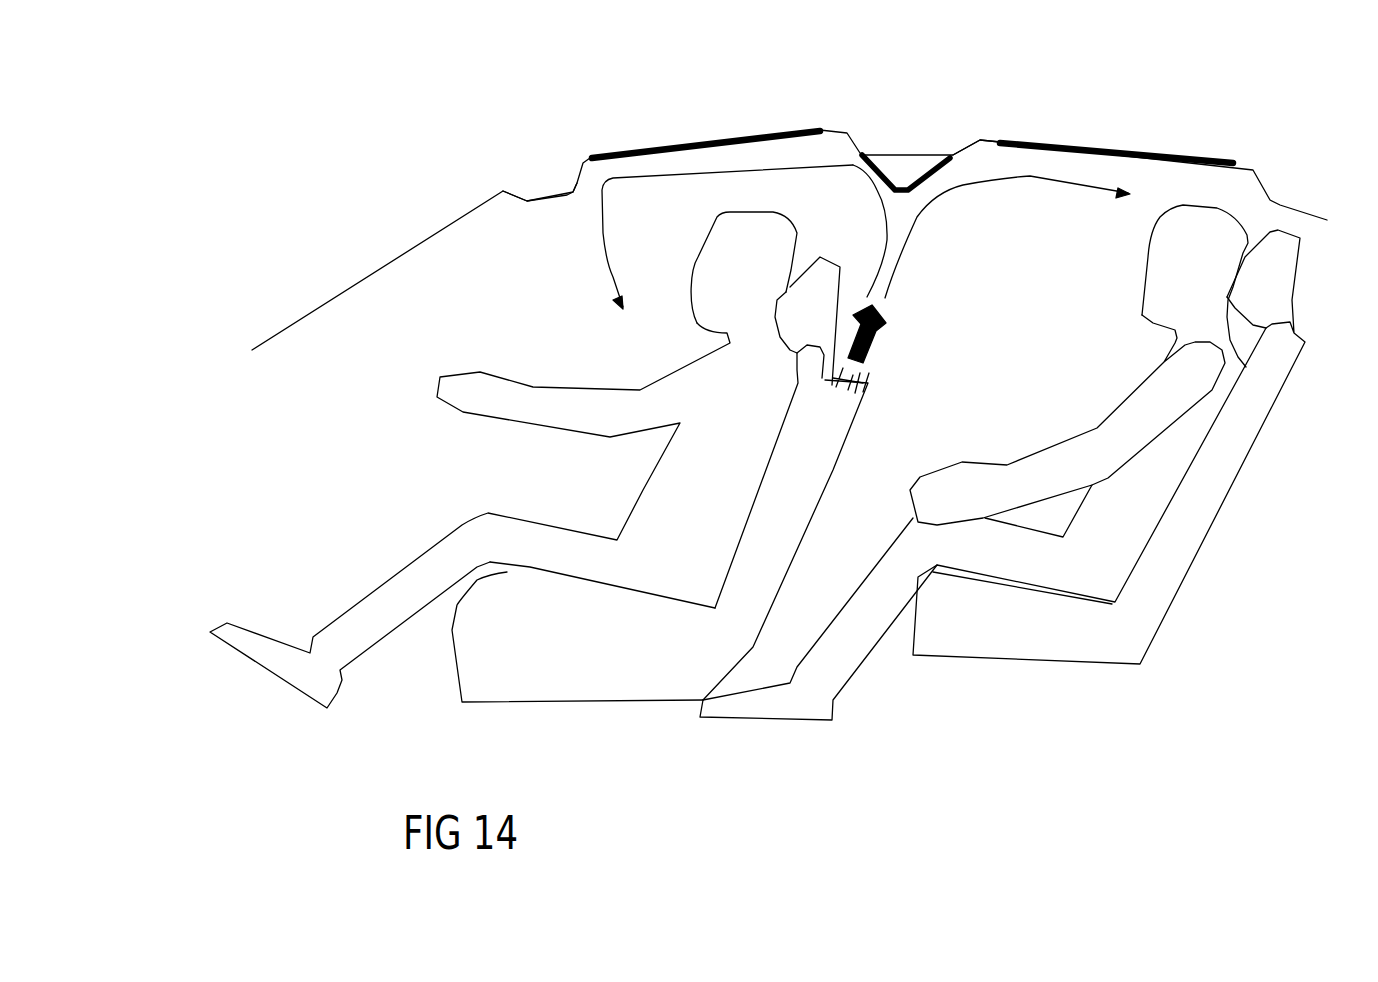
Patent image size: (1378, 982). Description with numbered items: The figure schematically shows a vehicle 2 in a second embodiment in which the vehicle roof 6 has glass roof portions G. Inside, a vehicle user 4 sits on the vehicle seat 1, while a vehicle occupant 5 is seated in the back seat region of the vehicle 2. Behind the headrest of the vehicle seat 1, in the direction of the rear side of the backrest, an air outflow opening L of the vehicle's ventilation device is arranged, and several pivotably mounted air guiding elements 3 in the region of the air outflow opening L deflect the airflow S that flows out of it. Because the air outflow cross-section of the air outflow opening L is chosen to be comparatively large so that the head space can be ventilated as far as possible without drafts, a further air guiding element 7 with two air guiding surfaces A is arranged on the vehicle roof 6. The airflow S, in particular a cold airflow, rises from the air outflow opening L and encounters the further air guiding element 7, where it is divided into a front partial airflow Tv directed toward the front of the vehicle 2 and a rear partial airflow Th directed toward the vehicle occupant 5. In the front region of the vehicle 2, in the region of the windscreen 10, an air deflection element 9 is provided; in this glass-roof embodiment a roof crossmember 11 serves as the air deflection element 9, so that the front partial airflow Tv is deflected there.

The vehicle seat 1 is at (612, 675).
The vehicle 2 is at (993, 115).
The air guiding elements 3 is at (868, 384).
The vehicle user 4 is at (668, 517).
The vehicle occupant 5 is at (1163, 463).
The vehicle roof 6 is at (977, 147).
The further air guiding element 7 is at (910, 163).
The air deflection element 9 is at (548, 193).
The windscreen 10 is at (360, 278).
The roof crossmember 11 is at (543, 147).
The glass roof portions G is at (730, 138).
The front partial airflow Tv is at (668, 173).
The rear partial airflow Th is at (1058, 177).
The air guiding surfaces A is at (868, 168).
The airflow S is at (890, 318).
The air outflow opening L is at (871, 371).